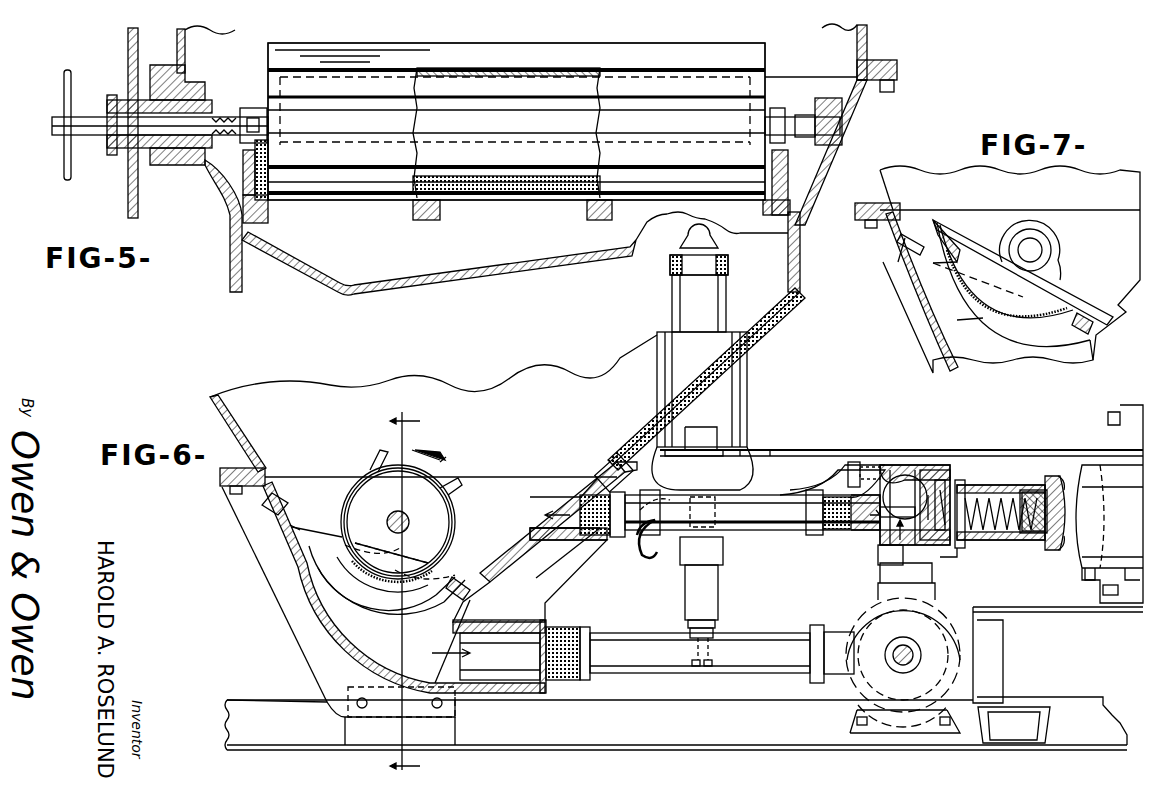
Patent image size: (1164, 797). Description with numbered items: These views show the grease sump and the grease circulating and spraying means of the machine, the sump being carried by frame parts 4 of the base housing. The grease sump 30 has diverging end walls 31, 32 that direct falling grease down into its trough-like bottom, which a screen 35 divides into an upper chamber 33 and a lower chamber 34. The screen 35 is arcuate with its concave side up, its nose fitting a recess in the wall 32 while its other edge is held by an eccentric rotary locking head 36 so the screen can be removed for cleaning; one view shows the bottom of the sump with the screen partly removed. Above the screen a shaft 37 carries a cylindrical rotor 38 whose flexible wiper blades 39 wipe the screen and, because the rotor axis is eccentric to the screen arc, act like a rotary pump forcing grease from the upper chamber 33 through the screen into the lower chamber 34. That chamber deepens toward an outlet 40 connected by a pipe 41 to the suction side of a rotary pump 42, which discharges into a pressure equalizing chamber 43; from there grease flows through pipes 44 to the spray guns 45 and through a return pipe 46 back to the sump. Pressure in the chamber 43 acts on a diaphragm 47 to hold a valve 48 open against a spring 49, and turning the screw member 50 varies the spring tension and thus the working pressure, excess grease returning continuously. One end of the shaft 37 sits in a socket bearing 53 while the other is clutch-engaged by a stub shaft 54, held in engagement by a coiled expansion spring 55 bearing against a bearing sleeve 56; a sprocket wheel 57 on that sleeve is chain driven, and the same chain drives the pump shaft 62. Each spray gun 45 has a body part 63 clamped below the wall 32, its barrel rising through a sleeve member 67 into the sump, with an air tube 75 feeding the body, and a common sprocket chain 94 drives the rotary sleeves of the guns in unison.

In FIG. 6, the frame parts 4 is at (620, 725).
In FIG. 7, the grease sump 30 is at (1128, 162).
In FIG. 6, the grease sump 30 is at (372, 382).
In FIG. 6, the end wall 31 is at (232, 405).
In FIG. 6, the end wall 32 is at (612, 462).
In FIG. 6, the upper chamber 33 is at (522, 484).
In FIG. 6, the lower chamber 34 is at (342, 630).
In FIG. 7, the screen 35 is at (997, 298).
In FIG. 6, the screen 35 is at (428, 600).
In FIG. 7, the eccentric rotary locking head 36 is at (935, 205).
In FIG. 6, the eccentric rotary locking head 36 is at (285, 520).
In FIG. 5, the shaft 37 is at (540, 110).
In FIG. 6, the shaft 37 is at (402, 515).
In FIG. 5, the rotor 38 is at (516, 121).
In FIG. 6, the rotor 38 is at (355, 485).
In FIG. 5, the flexible wiper blades 39 is at (500, 68).
In FIG. 6, the flexible wiper blades 39 is at (460, 490).
In FIG. 6, the outlet 40 is at (490, 635).
In FIG. 6, the pipe 41 is at (638, 640).
In FIG. 6, the pump 42 is at (860, 618).
In FIG. 6, the pressure equalizing chamber 43 is at (920, 470).
In FIG. 6, the pipes 44 is at (858, 440).
In FIG. 6, the spray guns 45 is at (657, 324).
In FIG. 6, the return pipe 46 is at (795, 530).
In FIG. 6, the diaphragm 47 is at (992, 508).
In FIG. 6, the valve 48 is at (880, 545).
In FIG. 6, the spring 49 is at (995, 500).
In FIG. 6, the screw member 50 is at (1062, 478).
In FIG. 5, the socket bearing 53 is at (842, 123).
In FIG. 7, the socket bearing 53 is at (1040, 250).
In FIG. 5, the stub shaft 54 is at (185, 150).
In FIG. 5, the coiled expansion spring 55 is at (225, 115).
In FIG. 5, the bearing sleeve 56 is at (186, 82).
In FIG. 5, the sprocket wheel 57 is at (130, 58).
In FIG. 6, the pump shaft 62 is at (898, 662).
In FIG. 6, the body part 63 is at (718, 586).
In FIG. 6, the sleeve member 67 is at (686, 411).
In FIG. 6, the tube 75 is at (640, 553).
In FIG. 6, the sprocket chain 94 is at (797, 445).